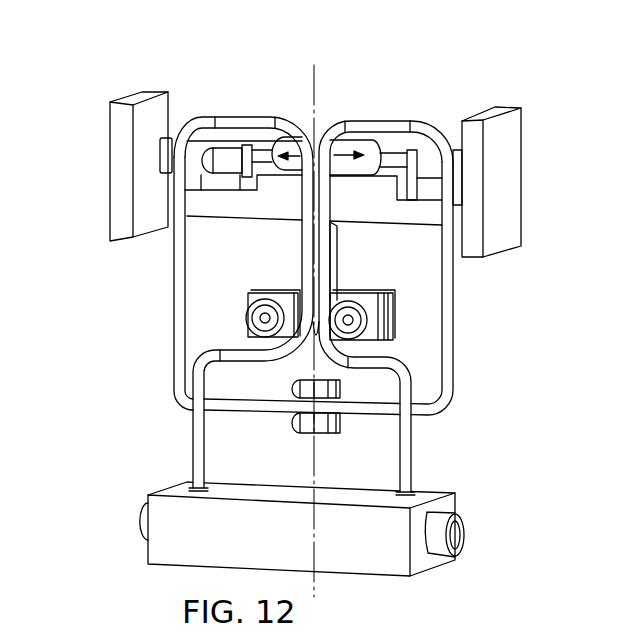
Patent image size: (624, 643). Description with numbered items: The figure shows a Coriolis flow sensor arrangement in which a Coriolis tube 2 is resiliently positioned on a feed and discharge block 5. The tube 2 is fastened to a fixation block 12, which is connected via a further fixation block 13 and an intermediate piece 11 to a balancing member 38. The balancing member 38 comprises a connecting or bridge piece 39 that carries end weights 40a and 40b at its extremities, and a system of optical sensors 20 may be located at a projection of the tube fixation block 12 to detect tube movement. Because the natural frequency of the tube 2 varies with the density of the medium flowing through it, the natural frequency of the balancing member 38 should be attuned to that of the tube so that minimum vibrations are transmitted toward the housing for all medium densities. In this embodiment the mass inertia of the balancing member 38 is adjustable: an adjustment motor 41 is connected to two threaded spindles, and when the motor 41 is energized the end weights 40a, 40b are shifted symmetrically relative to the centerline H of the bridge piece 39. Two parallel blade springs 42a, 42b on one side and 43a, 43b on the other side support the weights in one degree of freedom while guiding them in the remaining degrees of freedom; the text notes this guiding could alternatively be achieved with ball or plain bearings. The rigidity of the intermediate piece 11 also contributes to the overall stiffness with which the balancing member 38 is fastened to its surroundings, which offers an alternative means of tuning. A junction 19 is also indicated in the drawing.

The Coriolis tube 2 is at (465, 327).
The feed and discharge block 5 is at (340, 538).
The intermediate piece 11 is at (332, 263).
The fixation block 12 is at (395, 320).
The fixation block 13 is at (250, 293).
The junction 19 is at (315, 352).
The optical sensors 20 is at (337, 444).
The balancing member 38 is at (522, 164).
The bridge piece 39 is at (225, 208).
The end weight 40a is at (122, 163).
The end weight 40b is at (500, 175).
The adjustment motor 41 is at (340, 143).
The blade spring 42a is at (203, 182).
The blade spring 42b is at (241, 183).
The blade spring 43a is at (417, 192).
The blade spring 43b is at (457, 192).
The centerline H is at (315, 86).